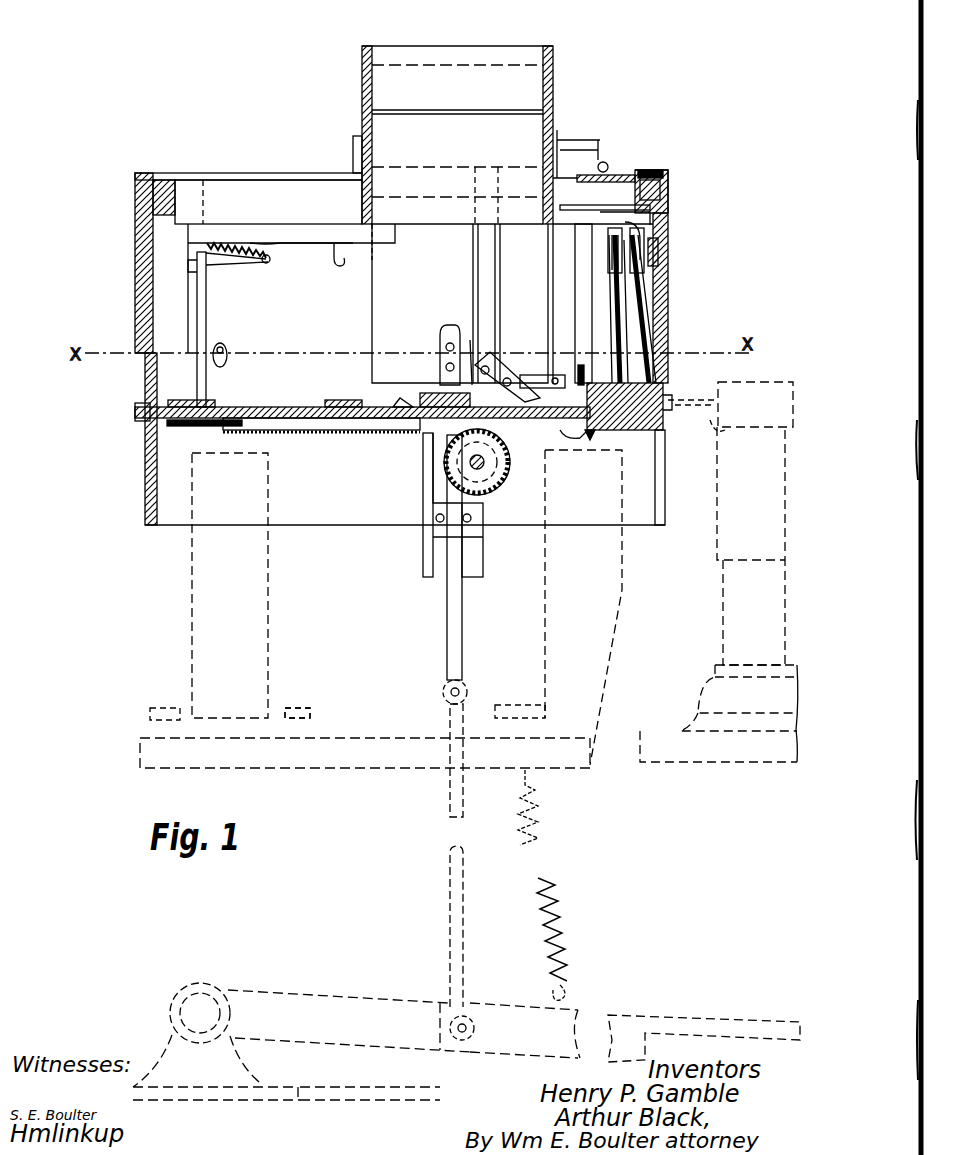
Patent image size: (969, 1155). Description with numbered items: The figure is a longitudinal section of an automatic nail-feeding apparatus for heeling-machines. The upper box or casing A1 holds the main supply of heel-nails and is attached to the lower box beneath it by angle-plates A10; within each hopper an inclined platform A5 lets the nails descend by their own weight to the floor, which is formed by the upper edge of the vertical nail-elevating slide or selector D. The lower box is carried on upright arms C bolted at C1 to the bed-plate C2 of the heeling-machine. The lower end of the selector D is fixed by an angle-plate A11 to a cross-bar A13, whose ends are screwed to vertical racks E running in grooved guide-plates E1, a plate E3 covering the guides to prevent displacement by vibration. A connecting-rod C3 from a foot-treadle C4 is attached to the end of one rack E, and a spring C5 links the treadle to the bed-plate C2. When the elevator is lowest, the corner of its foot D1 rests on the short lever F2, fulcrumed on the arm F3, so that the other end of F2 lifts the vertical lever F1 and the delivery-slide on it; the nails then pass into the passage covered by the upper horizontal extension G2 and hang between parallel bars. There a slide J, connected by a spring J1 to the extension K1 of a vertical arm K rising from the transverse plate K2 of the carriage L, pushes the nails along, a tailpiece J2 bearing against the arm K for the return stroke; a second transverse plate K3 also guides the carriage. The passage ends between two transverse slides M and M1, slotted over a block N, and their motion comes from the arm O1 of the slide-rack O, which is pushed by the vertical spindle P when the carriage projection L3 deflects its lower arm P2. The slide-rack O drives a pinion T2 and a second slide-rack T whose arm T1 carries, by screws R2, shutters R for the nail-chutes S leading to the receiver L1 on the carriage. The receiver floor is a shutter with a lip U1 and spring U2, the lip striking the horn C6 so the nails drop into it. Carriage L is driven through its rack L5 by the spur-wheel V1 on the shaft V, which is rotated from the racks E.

The upper horizontal extension G2 is at (502, 46).
The box or casing A1 is at (590, 58).
The inclined platform A5 is at (372, 112).
The angle-plates A10 is at (353, 155).
The transverse slide M is at (600, 176).
The transverse slide M1 is at (640, 172).
The screws R2 is at (650, 182).
The block N is at (665, 178).
The arm O1 is at (650, 207).
The slide-rack O is at (652, 215).
The pinion T2 is at (658, 242).
The slide-rack T is at (650, 268).
The arm T1 is at (612, 240).
The shutter R is at (648, 265).
The nail-chutes S is at (632, 305).
The vertical spindle P is at (578, 295).
The arm P2 is at (580, 378).
The vertical lever F1 is at (482, 260).
The nail-elevating slide or selector D is at (440, 252).
The vertical arm K is at (205, 325).
The extension K1 is at (245, 265).
The spring J1 is at (272, 258).
The slide J is at (337, 240).
The tailpiece J2 is at (190, 262).
The slide or carriage L is at (268, 407).
The transverse plate K2 is at (210, 400).
The transverse plate K3 is at (340, 400).
The projection L3 is at (395, 402).
The rack L5 is at (340, 440).
The receiver L1 is at (650, 400).
The angle-plate A11 is at (440, 343).
The short arm F3 is at (470, 355).
The short lever F2 is at (508, 370).
The foot D1 is at (530, 378).
The cross-bar A13 is at (433, 395).
The shaft V is at (485, 462).
The spur-wheel V1 is at (497, 478).
The lip U1 is at (565, 435).
The spring U2 is at (585, 432).
The guide-plates E1 is at (430, 575).
The plate E3 is at (467, 533).
The vertical rack E is at (447, 605).
The upright arms C is at (232, 612).
The bolting point C1 is at (310, 715).
The bed-plate C2 is at (298, 752).
The horn C6 is at (750, 490).
The connecting-rod C3 is at (450, 898).
The spring C5 is at (540, 832).
The foot-treadle C4 is at (665, 1020).